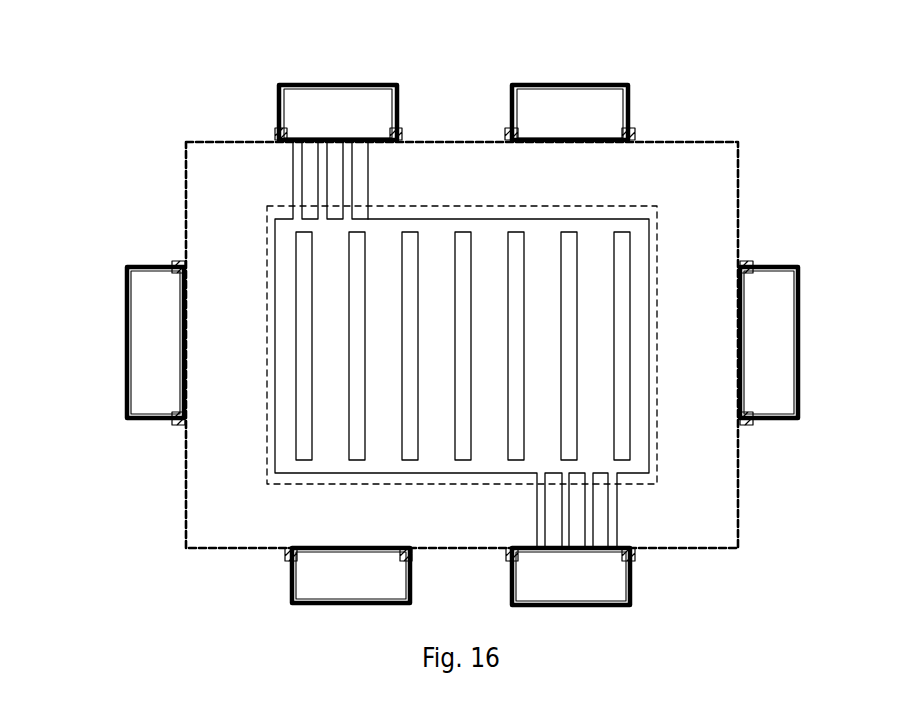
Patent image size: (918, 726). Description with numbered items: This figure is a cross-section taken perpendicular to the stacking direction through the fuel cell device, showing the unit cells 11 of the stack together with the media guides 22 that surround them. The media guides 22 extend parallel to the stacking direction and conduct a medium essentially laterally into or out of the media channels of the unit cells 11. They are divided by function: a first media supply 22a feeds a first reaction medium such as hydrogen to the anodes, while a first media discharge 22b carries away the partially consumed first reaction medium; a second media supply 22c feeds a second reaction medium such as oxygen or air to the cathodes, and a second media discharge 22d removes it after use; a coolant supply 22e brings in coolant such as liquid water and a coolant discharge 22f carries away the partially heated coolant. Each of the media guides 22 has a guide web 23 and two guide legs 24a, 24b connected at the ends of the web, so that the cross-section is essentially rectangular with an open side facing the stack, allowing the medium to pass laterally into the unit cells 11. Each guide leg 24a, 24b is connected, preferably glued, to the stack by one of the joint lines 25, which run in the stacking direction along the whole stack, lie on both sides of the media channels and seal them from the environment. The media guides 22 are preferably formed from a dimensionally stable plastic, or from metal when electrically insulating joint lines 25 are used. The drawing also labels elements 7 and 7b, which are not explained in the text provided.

The sensor substrate 7 is at (415, 362).
The substrate rear side 7b is at (210, 483).
The unit cell 11 is at (682, 220).
The media guide 22 is at (461, 353).
The first media supply 22a is at (131, 302).
The first media discharge 22b is at (798, 387).
The second media supply 22c is at (543, 83).
The second media discharge 22d is at (292, 606).
The coolant supply 22e is at (303, 83).
The coolant discharge 22f is at (620, 607).
The guide web 23 is at (360, 85).
The guide leg 24a is at (398, 100).
The guide leg 24b is at (279, 100).
The joint line 25 is at (633, 133).